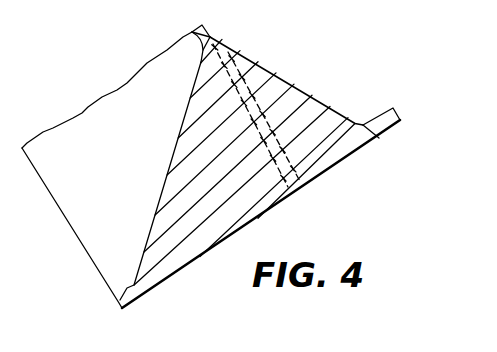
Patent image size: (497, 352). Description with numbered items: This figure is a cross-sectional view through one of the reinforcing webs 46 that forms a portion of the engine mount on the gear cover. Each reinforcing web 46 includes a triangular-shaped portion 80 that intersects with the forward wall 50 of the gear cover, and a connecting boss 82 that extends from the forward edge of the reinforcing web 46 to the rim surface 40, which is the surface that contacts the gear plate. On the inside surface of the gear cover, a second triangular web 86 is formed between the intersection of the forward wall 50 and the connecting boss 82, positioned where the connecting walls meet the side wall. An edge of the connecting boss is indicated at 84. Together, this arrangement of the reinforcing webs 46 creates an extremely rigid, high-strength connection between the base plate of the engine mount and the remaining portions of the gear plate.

The rim surface 40 is at (118, 303).
The reinforcing web 46 is at (286, 79).
The forward wall 50 is at (248, 50).
The triangular-shaped portion 80 is at (315, 116).
The connecting boss 82 is at (380, 112).
The flap edge 84 is at (398, 109).
The second triangular web 86 is at (174, 162).